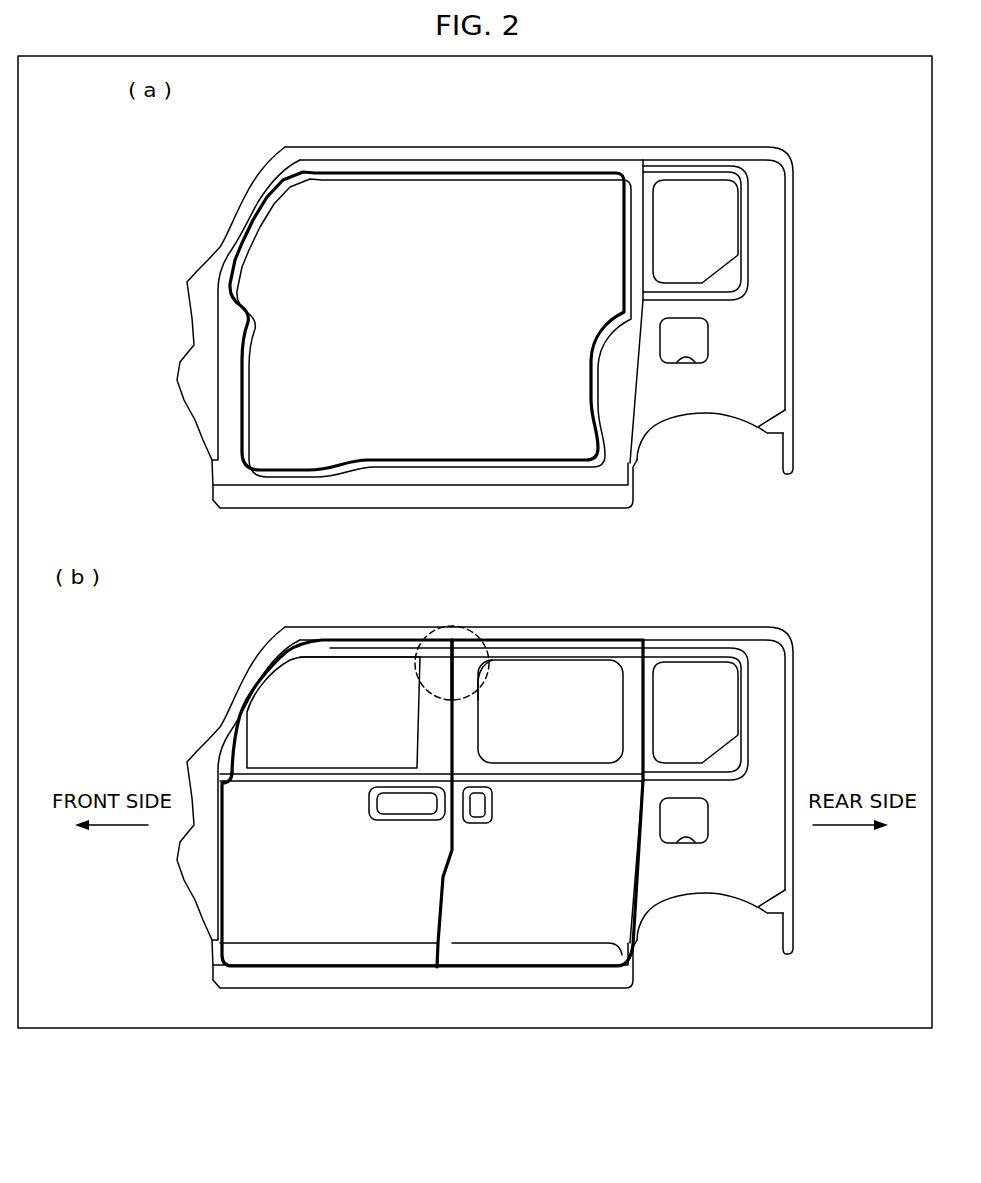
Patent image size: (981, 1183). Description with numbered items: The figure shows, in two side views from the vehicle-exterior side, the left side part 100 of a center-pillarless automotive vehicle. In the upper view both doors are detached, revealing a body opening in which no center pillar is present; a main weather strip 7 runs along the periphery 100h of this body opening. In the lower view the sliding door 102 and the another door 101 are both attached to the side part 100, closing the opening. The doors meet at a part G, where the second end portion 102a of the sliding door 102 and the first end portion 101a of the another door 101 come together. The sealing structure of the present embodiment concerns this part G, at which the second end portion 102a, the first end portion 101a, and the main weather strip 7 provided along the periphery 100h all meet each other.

The side part 100 is at (737, 147).
The periphery of the body opening 100h is at (541, 220).
The main weather strip 7 is at (613, 172).
The another door 101 is at (325, 820).
The sliding door 102 is at (538, 820).
The first end portion 101a is at (438, 648).
The second end portion 102a is at (473, 647).
The part G is at (468, 636).